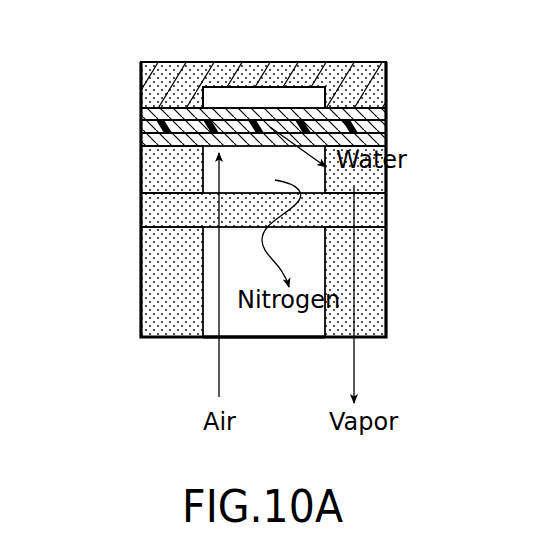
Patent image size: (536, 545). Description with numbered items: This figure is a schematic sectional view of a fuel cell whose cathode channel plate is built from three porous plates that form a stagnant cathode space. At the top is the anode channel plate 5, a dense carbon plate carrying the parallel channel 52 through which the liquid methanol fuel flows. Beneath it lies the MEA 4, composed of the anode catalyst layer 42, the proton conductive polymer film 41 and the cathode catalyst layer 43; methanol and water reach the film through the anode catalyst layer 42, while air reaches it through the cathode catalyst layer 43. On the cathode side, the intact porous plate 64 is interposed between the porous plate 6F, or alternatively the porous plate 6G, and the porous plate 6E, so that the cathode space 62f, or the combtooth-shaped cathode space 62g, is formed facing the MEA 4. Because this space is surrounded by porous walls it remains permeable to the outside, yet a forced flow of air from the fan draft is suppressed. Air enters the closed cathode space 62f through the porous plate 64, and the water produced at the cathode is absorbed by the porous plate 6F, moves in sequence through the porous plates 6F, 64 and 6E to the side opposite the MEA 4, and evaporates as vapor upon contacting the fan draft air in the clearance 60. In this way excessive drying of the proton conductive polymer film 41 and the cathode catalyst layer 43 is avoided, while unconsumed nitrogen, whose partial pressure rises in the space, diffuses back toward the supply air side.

The anode channel plate 5 is at (141, 87).
The parallel channel 52 is at (265, 93).
The MEA 4 is at (443, 85).
The anode catalyst layer 42 is at (388, 113).
The proton conductive polymer film 41 is at (388, 127).
The cathode catalyst layer 43 is at (388, 138).
The cathode space 62f is at (128, 166).
The cathode space 62g is at (210, 160).
The porous plate 6F is at (125, 169).
The porous plate 6G is at (155, 184).
The intact porous plate 64 is at (388, 211).
The porous plate 6E is at (141, 284).
The clearance 60 is at (244, 320).